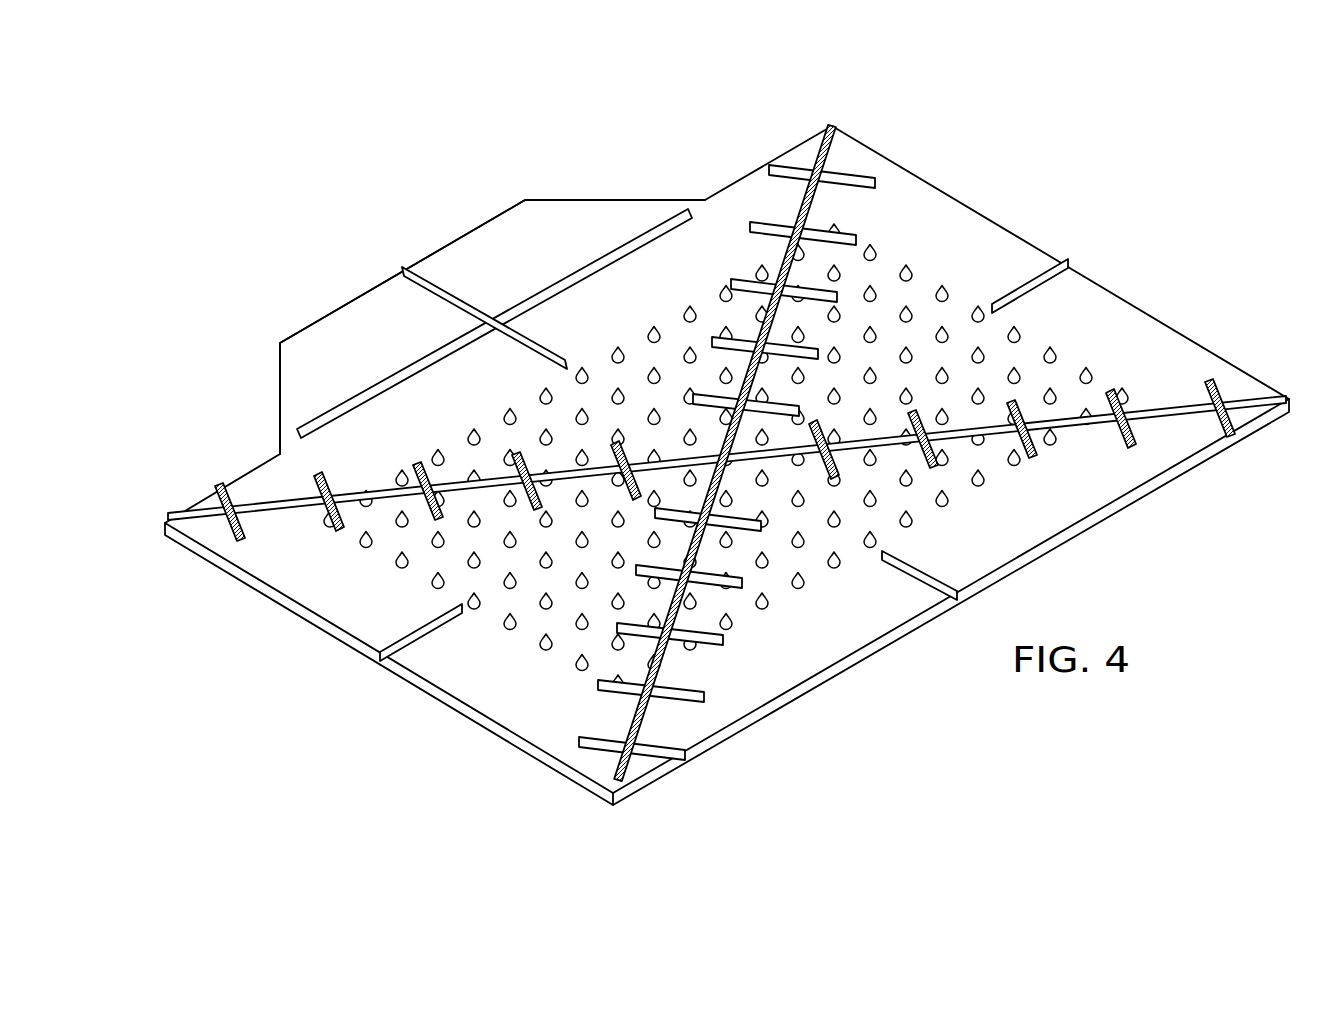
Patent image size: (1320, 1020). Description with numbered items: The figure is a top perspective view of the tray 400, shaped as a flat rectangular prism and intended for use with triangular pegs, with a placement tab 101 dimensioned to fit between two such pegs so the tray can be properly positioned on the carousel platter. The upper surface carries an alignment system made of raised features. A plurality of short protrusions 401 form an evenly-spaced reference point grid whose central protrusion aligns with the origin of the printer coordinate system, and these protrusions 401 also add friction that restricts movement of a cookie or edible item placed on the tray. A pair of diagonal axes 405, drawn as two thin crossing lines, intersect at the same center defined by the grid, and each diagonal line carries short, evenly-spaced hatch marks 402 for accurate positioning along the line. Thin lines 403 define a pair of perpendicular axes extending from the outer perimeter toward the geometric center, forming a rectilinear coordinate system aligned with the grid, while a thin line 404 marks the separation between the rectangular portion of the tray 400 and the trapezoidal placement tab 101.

The tray 400 is at (409, 122).
The placement tab 101 is at (617, 200).
The short protrusions 401 is at (1089, 373).
The hatch marks 402 is at (205, 504).
The thin lines defining perpendicular axes 403 is at (940, 573).
The thin line 404 is at (370, 393).
The diagonal axes 405 is at (843, 163).